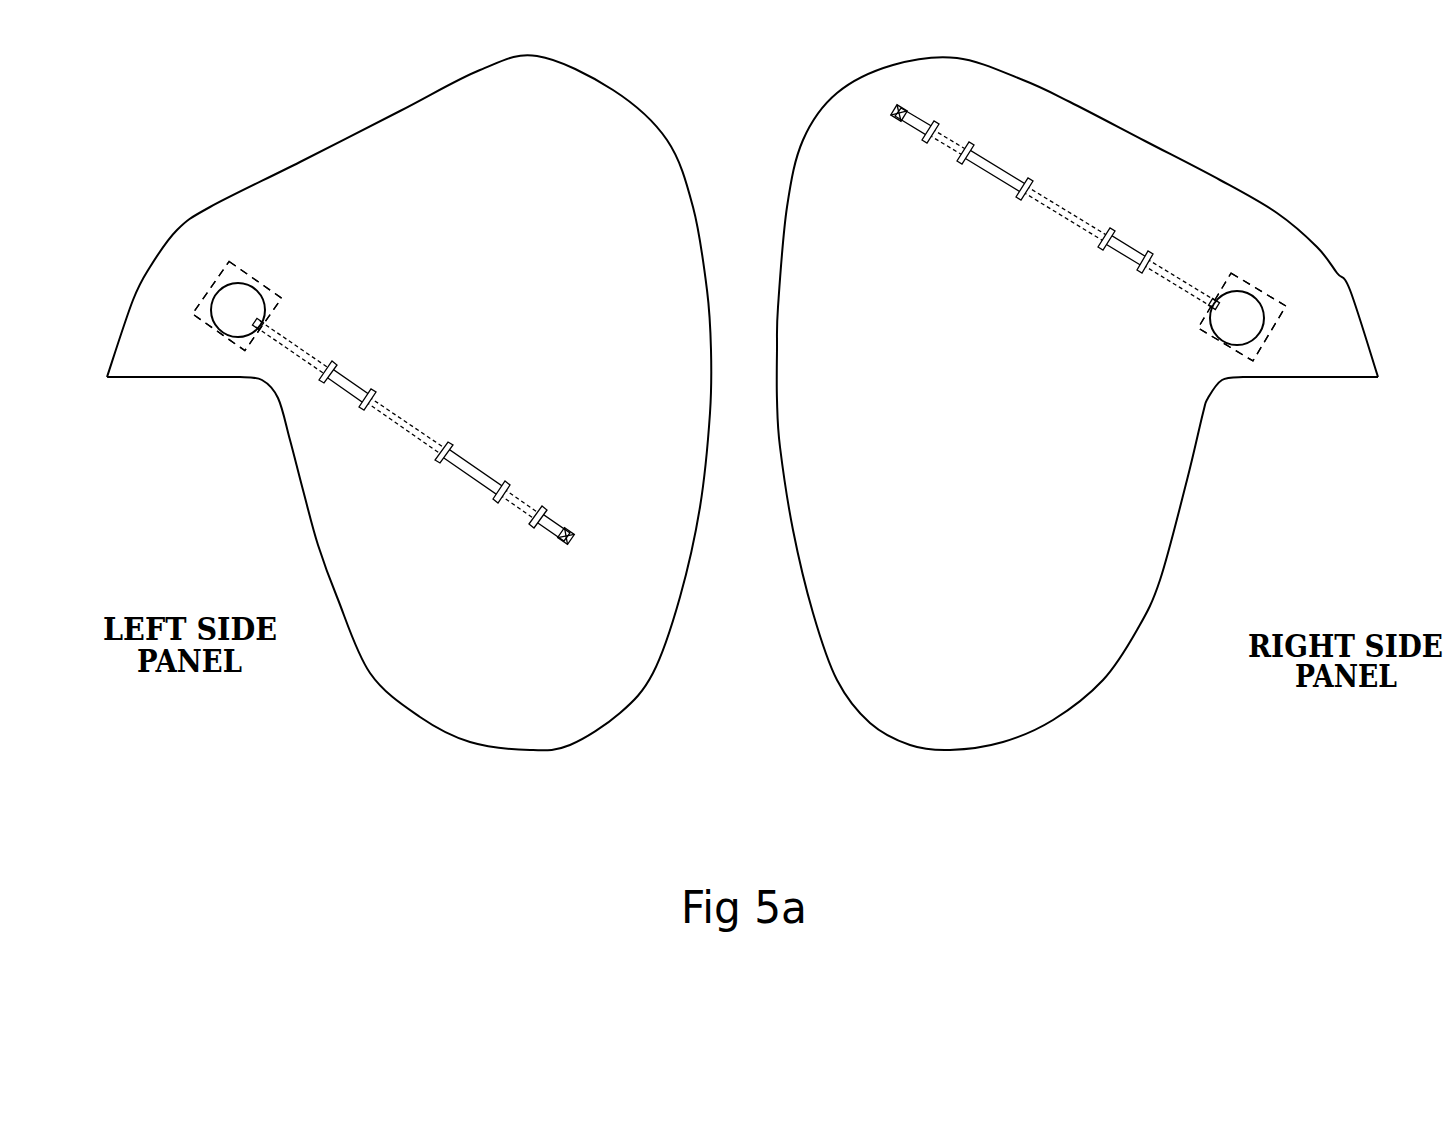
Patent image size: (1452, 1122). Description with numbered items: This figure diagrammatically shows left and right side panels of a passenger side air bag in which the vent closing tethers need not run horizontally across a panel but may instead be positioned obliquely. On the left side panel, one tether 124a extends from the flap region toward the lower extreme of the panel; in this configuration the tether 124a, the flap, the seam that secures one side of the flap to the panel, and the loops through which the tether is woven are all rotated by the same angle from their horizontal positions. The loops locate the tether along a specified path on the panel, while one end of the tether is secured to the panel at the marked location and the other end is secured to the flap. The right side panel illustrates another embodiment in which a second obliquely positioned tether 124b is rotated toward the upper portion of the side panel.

The tether 124a is at (347, 373).
The second obliquely positioned tether 124b is at (1058, 222).